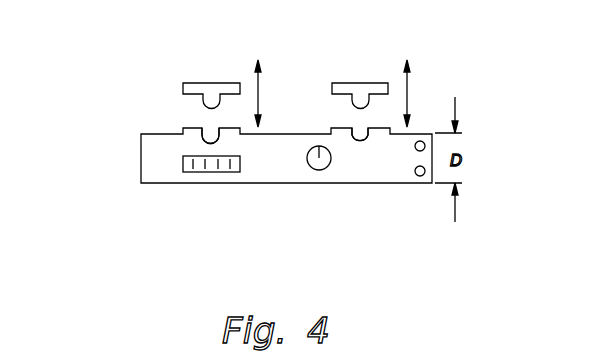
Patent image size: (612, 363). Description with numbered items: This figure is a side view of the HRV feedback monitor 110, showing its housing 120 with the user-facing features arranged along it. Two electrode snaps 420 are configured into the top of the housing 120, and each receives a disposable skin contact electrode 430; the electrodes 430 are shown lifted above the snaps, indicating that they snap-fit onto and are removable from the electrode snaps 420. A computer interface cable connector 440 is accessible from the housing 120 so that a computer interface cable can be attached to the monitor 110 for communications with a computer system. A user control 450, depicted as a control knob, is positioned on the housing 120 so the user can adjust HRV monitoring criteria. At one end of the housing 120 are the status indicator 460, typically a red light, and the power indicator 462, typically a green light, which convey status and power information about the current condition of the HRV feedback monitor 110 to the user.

The HRV feedback monitor 110 is at (440, 72).
The housing 120 is at (141, 158).
The electrode snaps 420 is at (210, 141).
The disposable skin contact electrodes 430 is at (212, 83).
The computer interface cable connector 440 is at (213, 172).
The user control 450 is at (318, 171).
The status indicator 460 is at (424, 142).
The power indicator 462 is at (424, 176).